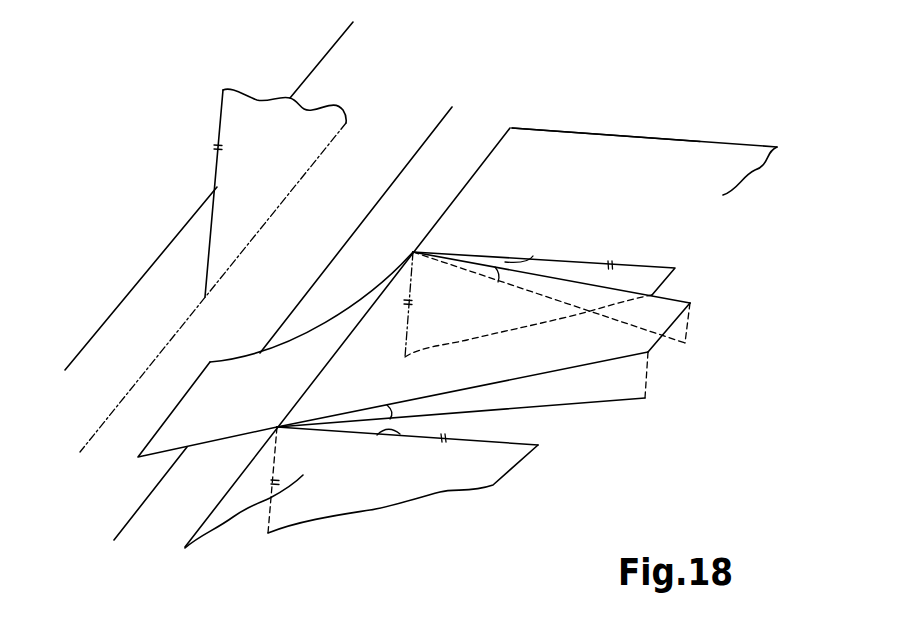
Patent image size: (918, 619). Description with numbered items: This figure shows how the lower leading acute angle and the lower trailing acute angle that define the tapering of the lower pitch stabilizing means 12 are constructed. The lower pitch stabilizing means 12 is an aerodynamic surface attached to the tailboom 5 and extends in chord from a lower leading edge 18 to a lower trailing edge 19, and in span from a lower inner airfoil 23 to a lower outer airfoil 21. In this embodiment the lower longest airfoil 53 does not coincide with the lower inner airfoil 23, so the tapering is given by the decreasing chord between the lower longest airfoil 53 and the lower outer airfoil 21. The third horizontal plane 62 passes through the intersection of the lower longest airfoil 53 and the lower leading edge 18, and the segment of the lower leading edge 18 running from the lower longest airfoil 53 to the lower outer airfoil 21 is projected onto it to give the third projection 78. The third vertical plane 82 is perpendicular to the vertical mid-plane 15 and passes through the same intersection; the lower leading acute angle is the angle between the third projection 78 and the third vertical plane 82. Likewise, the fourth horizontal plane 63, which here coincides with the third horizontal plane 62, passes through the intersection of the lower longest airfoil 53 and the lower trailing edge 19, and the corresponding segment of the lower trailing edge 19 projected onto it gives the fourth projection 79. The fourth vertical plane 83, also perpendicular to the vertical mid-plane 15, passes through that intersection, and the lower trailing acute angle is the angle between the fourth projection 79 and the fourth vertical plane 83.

The tailboom 5 is at (167, 280).
The lower pitch stabilizing means 12 is at (722, 279).
The vertical mid-plane 15 is at (242, 123).
The lower leading edge 18 is at (523, 378).
The lower trailing edge 19 is at (687, 280).
The lower outer airfoil 21 is at (657, 345).
The lower inner airfoil 23 is at (172, 410).
The lower longest airfoil 53 is at (336, 348).
The third horizontal plane 62 is at (687, 160).
The fourth horizontal plane 63 is at (632, 160).
The third projection 78 is at (610, 398).
The fourth projection 79 is at (557, 300).
The third vertical plane 82 is at (470, 462).
The fourth vertical plane 83 is at (638, 282).